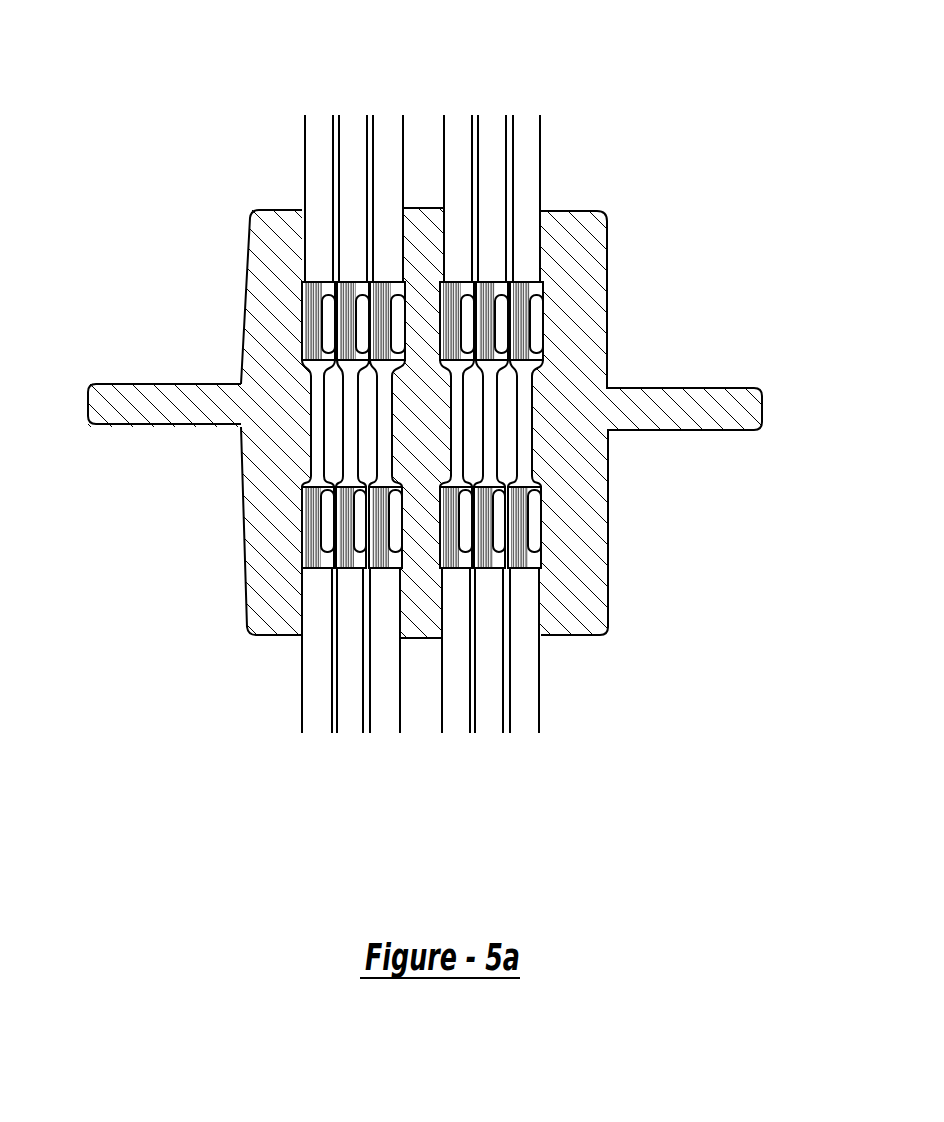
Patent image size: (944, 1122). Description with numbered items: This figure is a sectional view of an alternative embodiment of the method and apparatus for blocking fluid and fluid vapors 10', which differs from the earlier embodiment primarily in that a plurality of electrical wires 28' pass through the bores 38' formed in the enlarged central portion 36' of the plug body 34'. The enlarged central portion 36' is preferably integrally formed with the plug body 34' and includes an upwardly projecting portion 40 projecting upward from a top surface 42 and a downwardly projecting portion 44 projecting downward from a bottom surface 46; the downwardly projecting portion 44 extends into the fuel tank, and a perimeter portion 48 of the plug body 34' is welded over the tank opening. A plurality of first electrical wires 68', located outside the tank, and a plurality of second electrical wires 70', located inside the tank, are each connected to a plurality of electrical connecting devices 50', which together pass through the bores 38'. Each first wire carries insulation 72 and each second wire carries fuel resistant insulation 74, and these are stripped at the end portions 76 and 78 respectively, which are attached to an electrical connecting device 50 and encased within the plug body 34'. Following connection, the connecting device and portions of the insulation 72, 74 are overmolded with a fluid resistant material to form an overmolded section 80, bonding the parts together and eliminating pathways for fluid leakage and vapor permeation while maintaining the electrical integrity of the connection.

The method and apparatus for blocking fluid and fluid vapors 10' is at (431, 423).
The electrical wires 28' is at (434, 438).
The plug body 34' is at (421, 345).
The enlarged central portion 36' is at (647, 423).
The bores 38' is at (419, 415).
The upwardly projecting portion 40 is at (243, 275).
The top surface 42 is at (140, 383).
The downwardly projecting portion 44 is at (598, 598).
The bottom surface 46 is at (158, 428).
The perimeter portion 48 is at (88, 400).
The electrical connecting device 50 is at (199, 422).
The electrical connecting devices 50' is at (647, 423).
The first electrical wires 68' is at (413, 164).
The second electrical wires 70' is at (420, 699).
The insulation 72 is at (403, 175).
The insulation 74 is at (353, 720).
The end portion 76 is at (300, 330).
The end portion 78 is at (300, 525).
The overmolded section 80 is at (215, 505).